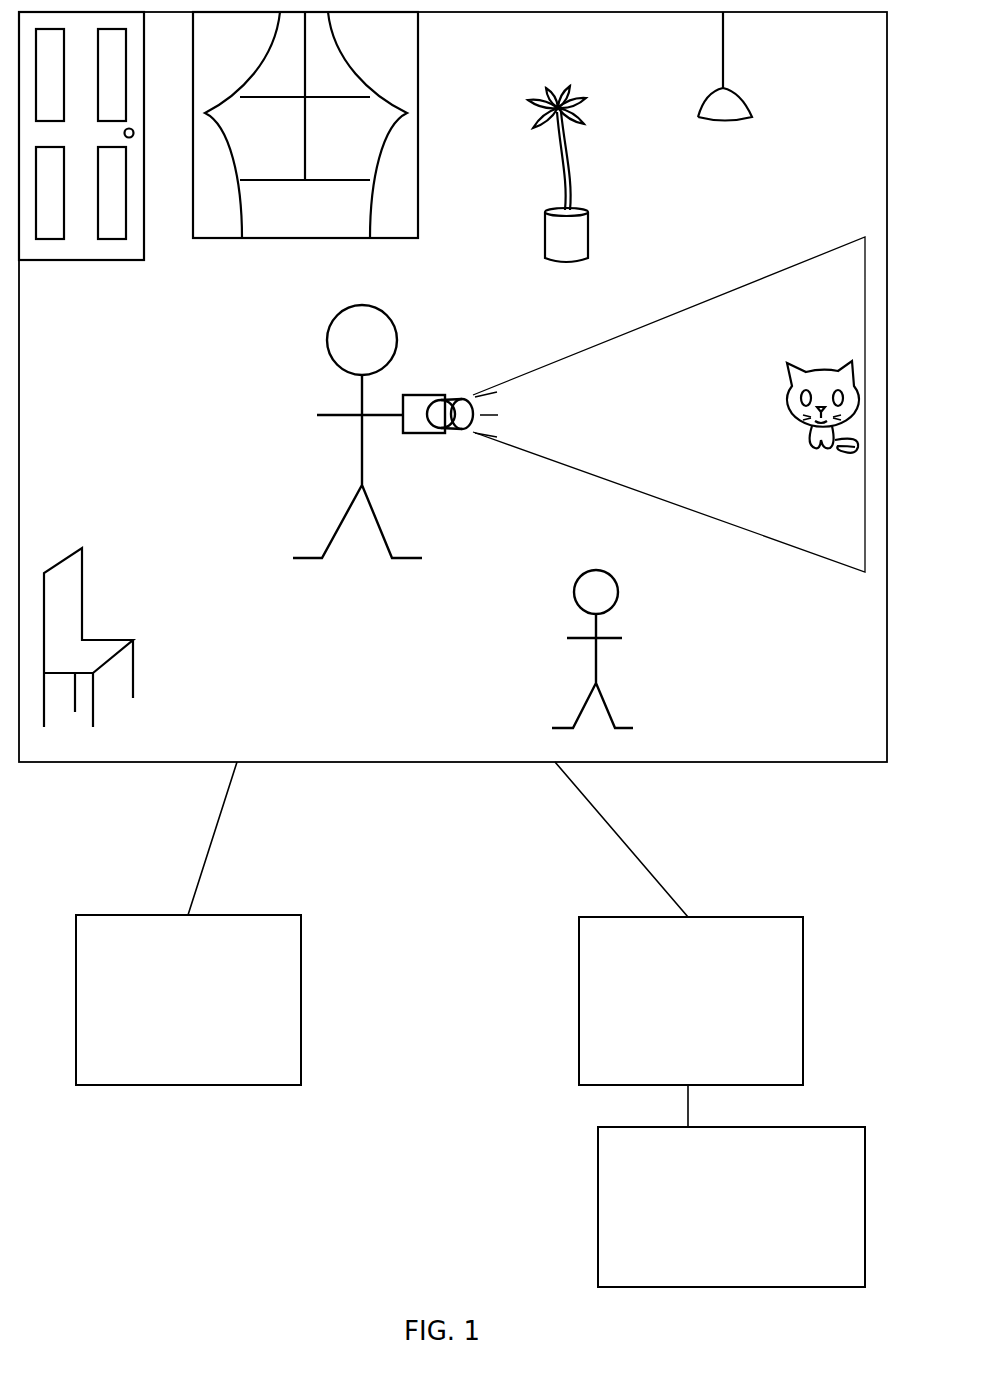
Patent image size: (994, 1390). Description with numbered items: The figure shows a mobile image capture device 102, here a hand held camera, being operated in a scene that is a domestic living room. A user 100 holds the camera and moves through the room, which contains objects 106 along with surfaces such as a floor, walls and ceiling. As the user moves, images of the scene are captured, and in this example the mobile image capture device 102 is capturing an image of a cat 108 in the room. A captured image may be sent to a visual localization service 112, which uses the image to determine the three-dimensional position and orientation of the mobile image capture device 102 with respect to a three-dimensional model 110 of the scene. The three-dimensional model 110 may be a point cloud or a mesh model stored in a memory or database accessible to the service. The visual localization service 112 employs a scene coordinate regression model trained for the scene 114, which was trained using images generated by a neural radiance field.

The user 100 is at (360, 395).
The mobile image capture device 102 is at (427, 394).
The objects 106 is at (80, 260).
The cat 108 is at (842, 432).
The 3D model 110 is at (270, 915).
The visual localization service 112 is at (777, 917).
The scene coordinate regression model trained for the scene 114 is at (752, 1261).